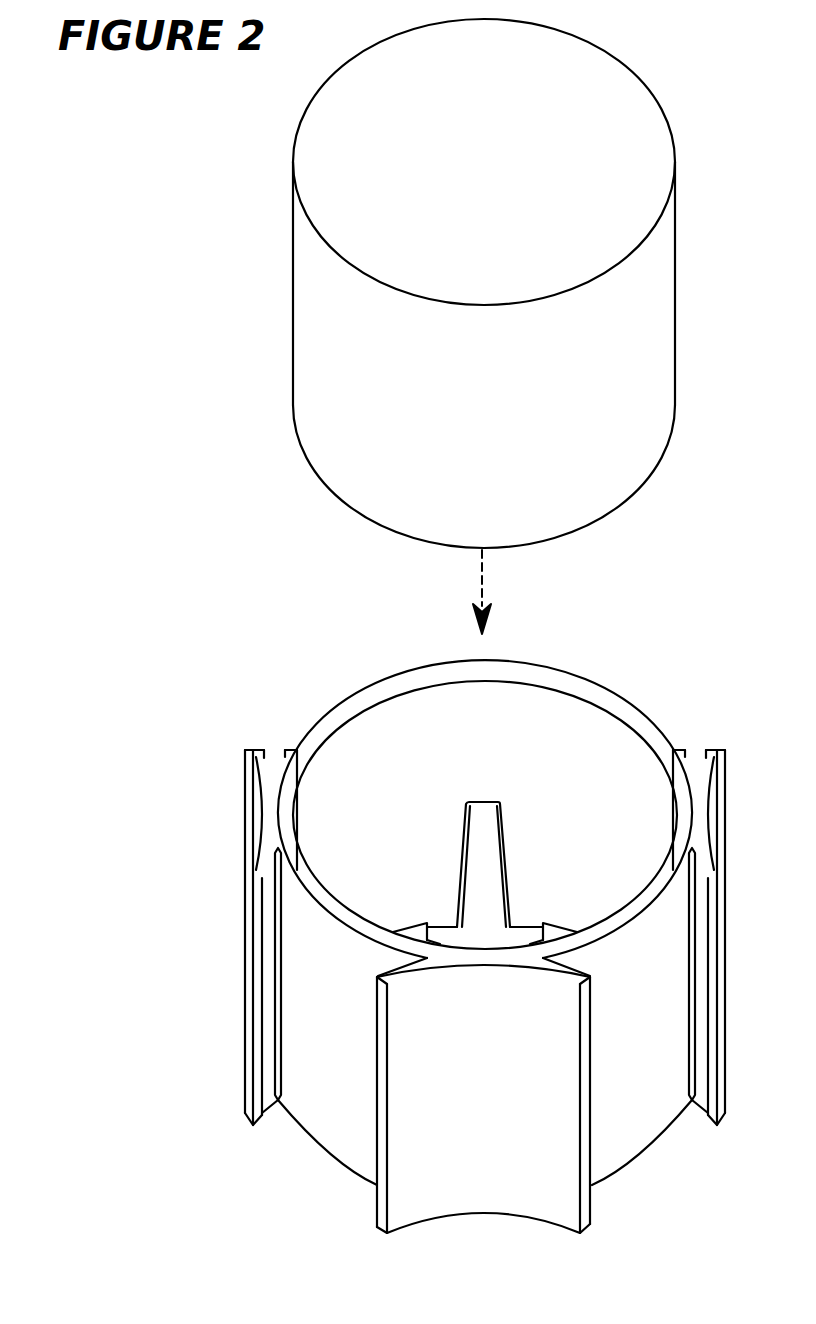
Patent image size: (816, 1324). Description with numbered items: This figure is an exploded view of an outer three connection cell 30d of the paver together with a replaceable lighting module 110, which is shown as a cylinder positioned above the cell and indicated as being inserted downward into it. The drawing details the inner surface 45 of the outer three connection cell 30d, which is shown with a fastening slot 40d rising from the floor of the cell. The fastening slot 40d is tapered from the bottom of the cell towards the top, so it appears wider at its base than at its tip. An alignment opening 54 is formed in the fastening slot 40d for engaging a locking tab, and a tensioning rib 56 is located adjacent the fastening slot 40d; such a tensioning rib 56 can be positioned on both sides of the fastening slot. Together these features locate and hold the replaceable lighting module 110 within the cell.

The replaceable lighting module 110 is at (612, 85).
The outer three connection cell 30d is at (633, 688).
The inner surface 45 is at (352, 728).
The fastening slot 40d is at (484, 801).
The tensioning rib 56 is at (511, 906).
The alignment opening 54 is at (490, 925).